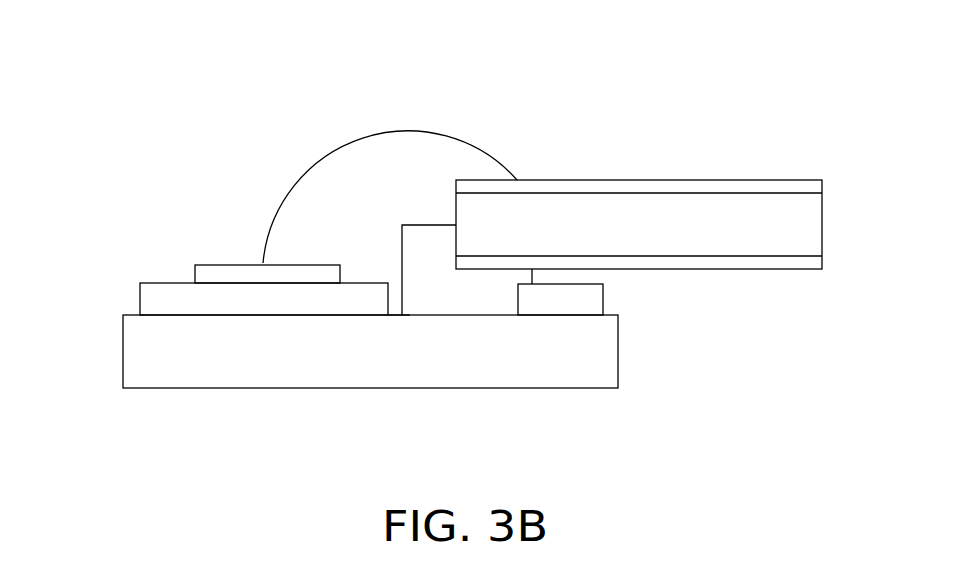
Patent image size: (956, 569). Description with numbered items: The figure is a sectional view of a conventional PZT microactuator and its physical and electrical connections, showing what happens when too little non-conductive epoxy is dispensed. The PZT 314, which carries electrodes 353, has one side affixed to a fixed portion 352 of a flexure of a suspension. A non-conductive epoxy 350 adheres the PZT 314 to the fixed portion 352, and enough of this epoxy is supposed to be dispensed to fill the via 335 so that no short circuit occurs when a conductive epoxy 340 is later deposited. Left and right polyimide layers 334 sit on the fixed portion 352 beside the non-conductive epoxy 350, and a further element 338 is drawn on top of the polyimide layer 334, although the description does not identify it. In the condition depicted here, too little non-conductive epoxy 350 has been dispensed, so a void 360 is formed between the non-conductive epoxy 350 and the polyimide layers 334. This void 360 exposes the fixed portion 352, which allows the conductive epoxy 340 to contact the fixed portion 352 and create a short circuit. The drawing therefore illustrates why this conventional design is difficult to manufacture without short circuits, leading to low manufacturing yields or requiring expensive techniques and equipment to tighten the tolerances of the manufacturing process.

The PZT 314 is at (578, 199).
The polyimide layer 334 is at (148, 262).
The via 335 is at (432, 270).
The phosphor layer 338 is at (249, 247).
The conductive epoxy 340 is at (382, 157).
The non-conductive epoxy 350 is at (502, 315).
The fixed portion 352 is at (572, 375).
The electrodes 353 is at (710, 239).
The void 360 is at (401, 337).